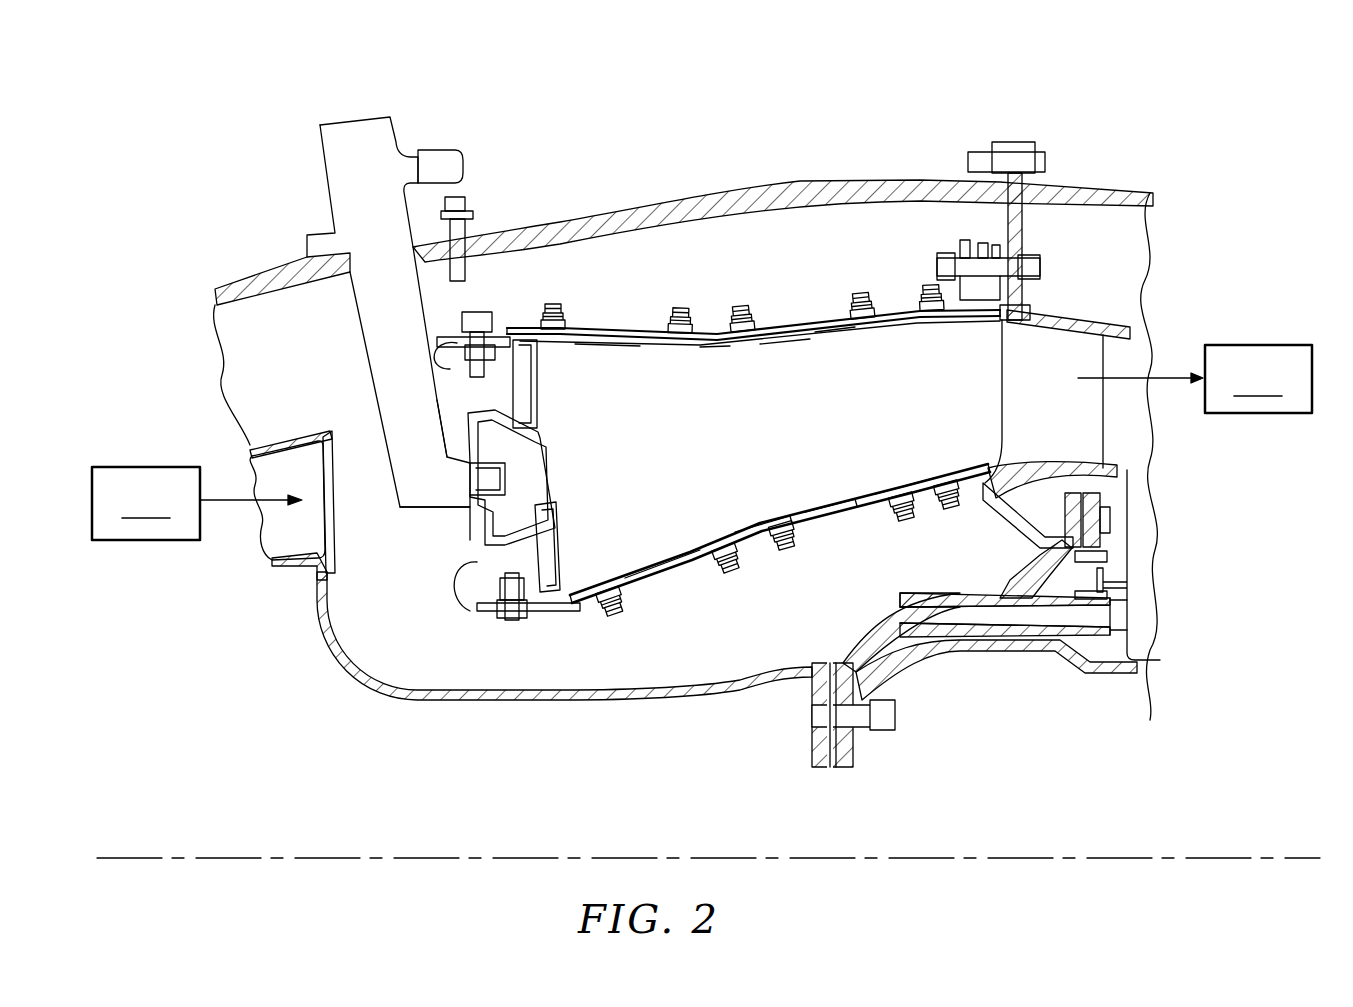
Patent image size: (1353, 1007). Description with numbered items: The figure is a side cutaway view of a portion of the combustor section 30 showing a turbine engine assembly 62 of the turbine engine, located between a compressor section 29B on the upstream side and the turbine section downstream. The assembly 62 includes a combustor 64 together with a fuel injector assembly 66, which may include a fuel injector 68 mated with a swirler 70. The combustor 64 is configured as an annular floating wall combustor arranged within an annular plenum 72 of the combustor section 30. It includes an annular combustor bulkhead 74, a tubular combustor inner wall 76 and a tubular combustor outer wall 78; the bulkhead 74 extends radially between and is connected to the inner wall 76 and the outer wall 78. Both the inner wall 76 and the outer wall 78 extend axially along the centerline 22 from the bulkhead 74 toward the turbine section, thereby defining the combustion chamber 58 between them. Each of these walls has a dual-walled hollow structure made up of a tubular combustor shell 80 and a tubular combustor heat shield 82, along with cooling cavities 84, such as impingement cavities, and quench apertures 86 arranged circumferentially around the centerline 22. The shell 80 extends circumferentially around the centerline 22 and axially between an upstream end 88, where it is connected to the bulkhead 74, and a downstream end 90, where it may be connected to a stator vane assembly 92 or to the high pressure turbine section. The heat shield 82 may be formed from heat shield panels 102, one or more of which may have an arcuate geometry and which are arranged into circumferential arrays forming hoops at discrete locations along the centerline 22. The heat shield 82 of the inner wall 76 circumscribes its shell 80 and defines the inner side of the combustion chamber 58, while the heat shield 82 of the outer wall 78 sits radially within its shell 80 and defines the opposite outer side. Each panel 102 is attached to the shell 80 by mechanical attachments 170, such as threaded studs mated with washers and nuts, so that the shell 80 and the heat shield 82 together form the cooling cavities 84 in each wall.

The centerline 22 is at (513, 855).
The high pressure compressor 29B is at (197, 503).
The combustor section 30 is at (687, 404).
The turbine engine assembly 62 is at (1042, 113).
The combustion chamber 58 is at (782, 430).
The combustor 64 is at (700, 314).
The fuel injector assembly 66 is at (427, 530).
The fuel injector 68 is at (350, 324).
The swirler 70 is at (500, 552).
The annular plenum 72 is at (803, 246).
The combustor bulkhead 74 is at (563, 535).
The combustor inner wall 76 is at (865, 527).
The combustor outer wall 78 is at (753, 432).
The combustor shell 80 is at (605, 330).
The combustor heat shield 82 is at (683, 345).
The cooling cavities 84 is at (565, 337).
The quench apertures 86 is at (803, 331).
The upstream end 88 is at (440, 342).
The downstream end 90 is at (1015, 312).
The stator vane assembly 92 is at (1067, 412).
The heat shield panels 102 is at (623, 338).
The mechanical attachments 170 is at (552, 300).